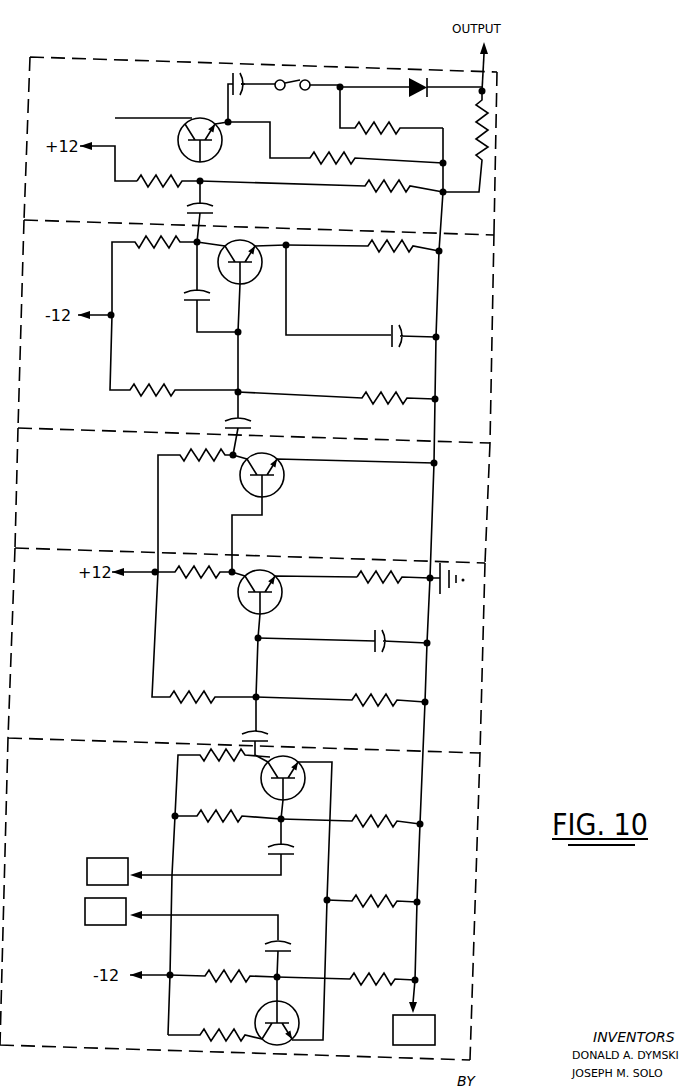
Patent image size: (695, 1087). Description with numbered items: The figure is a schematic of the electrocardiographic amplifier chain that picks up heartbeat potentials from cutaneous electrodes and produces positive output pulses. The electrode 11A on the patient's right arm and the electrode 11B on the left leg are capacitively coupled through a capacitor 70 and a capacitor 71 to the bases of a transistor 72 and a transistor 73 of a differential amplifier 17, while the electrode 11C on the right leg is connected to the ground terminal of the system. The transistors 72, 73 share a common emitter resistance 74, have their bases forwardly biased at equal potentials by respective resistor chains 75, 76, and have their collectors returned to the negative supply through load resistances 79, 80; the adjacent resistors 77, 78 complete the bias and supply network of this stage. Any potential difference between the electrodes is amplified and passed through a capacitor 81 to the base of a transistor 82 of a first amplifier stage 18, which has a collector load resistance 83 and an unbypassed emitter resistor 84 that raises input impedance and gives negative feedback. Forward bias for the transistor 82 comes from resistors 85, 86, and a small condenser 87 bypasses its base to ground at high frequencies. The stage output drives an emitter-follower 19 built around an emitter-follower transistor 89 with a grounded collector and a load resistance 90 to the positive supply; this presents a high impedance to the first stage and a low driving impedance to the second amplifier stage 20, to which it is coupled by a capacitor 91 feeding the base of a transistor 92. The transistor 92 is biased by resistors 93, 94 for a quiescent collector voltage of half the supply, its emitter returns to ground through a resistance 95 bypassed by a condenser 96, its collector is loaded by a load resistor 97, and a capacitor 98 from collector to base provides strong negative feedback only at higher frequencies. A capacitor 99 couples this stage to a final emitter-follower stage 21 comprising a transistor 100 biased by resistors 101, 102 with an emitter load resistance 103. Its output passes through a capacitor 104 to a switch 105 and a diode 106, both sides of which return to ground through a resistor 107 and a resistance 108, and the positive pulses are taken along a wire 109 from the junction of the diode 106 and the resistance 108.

The electrode 11A is at (87, 858).
The electrode 11B is at (85, 898).
The electrode 11C is at (435, 1018).
The differential amplifier 17 is at (475, 933).
The first amplifier stage 18 is at (483, 700).
The emitter-follower 19 is at (487, 540).
The second amplifier stage 20 is at (491, 370).
The final emitter-follower stage 21 is at (497, 203).
The capacitor 70 is at (273, 851).
The capacitor 71 is at (270, 943).
The transistor 72 is at (265, 781).
The transistor 73 is at (263, 1040).
The common emitter resistance 74 is at (380, 895).
The resistor chain 75 is at (217, 822).
The resistor chain 76 is at (378, 815).
The resistor 77 is at (225, 950).
The resistor 78 is at (378, 975).
The load resistance 79 is at (235, 757).
The load resistance 80 is at (220, 1005).
The capacitor 81 is at (245, 732).
The transistor 82 is at (280, 604).
The load resistance 83 is at (185, 582).
The resistor 84 is at (390, 592).
The resistor 85 is at (205, 667).
The resistor 86 is at (373, 706).
The condenser 87 is at (373, 648).
The emitter-follower transistor 89 is at (285, 488).
The load resistance 90 is at (215, 462).
The capacitor 91 is at (250, 428).
The transistor 92 is at (245, 282).
The resistor 93 is at (137, 383).
The resistor 94 is at (388, 393).
The resistance 95 is at (382, 252).
The condenser 96 is at (398, 327).
The load resistor 97 is at (160, 250).
The capacitor 98 is at (183, 292).
The capacitor 99 is at (213, 213).
The transistor 100 is at (194, 117).
The resistor 101 is at (140, 184).
The resistor 102 is at (383, 193).
The load resistance 103 is at (330, 152).
The capacitor 104 is at (235, 75).
The switch 105 is at (285, 80).
The diode 106 is at (410, 76).
The resistor 107 is at (378, 128).
The resistance 108 is at (484, 122).
The wire 109 is at (486, 70).